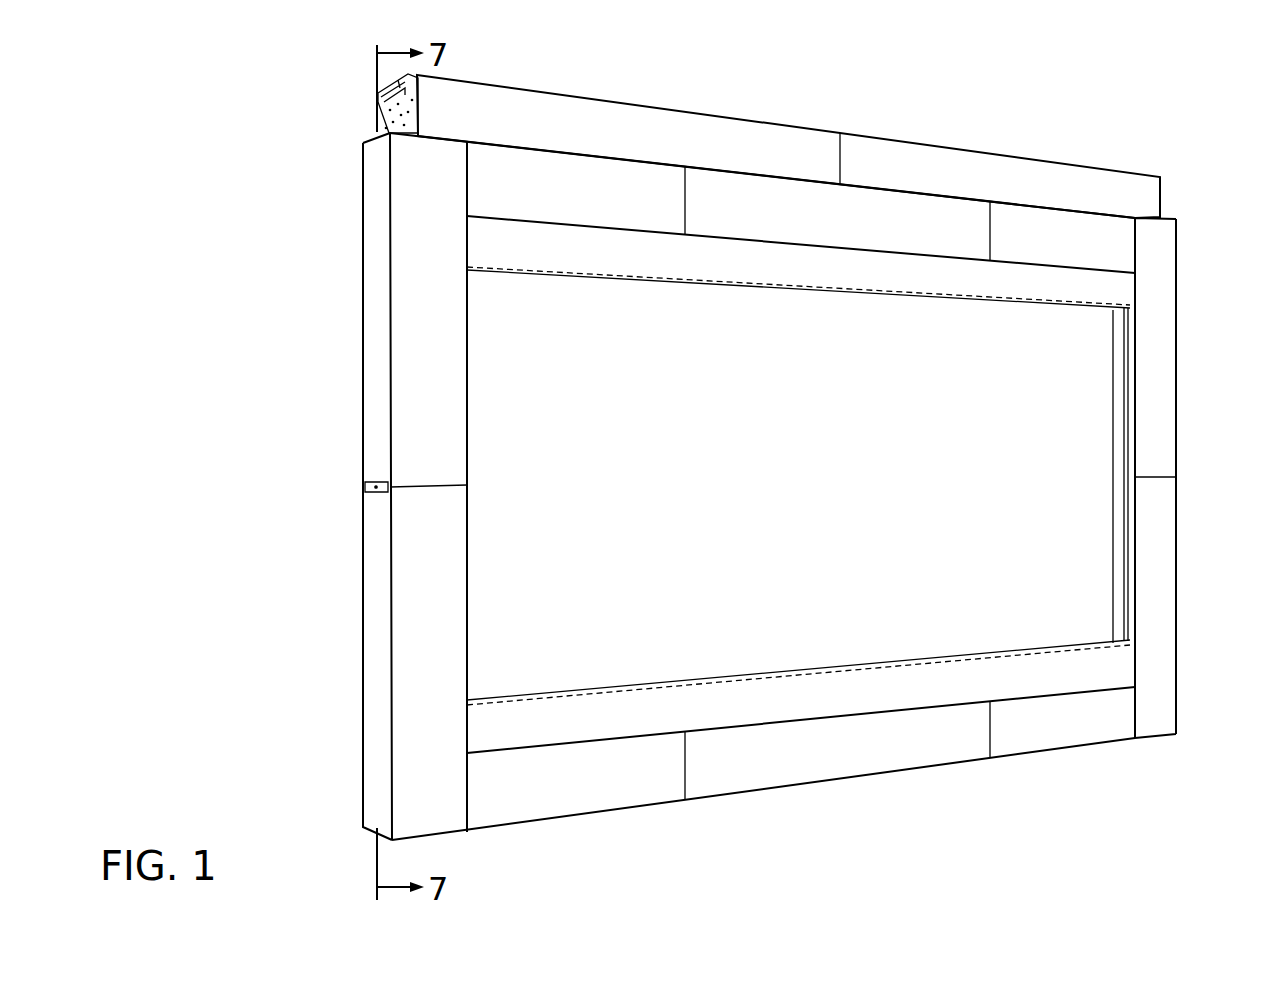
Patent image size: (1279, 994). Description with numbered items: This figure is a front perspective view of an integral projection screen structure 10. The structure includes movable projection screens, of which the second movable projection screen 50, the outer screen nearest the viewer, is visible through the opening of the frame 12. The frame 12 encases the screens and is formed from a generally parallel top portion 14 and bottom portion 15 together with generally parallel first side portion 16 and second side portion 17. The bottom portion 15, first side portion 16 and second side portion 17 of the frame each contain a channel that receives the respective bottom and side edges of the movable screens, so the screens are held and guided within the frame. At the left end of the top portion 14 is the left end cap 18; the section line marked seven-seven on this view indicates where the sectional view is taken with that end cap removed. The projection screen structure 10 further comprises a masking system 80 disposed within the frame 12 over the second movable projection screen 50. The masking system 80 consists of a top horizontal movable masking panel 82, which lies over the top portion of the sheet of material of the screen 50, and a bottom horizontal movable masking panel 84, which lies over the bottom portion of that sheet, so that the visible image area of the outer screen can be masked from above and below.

The projection screen structure 10 is at (764, 440).
The frame 12 is at (764, 457).
The top portion 14 is at (760, 122).
The bottom portion 15 is at (823, 782).
The first side portion 16 is at (373, 570).
The second side portion 17 is at (1178, 405).
The left end cap 18 is at (383, 118).
The second movable projection screen 50 is at (842, 483).
The masking system 80 is at (798, 483).
The top horizontal movable masking panel 82 is at (655, 262).
The bottom horizontal movable masking panel 84 is at (693, 705).